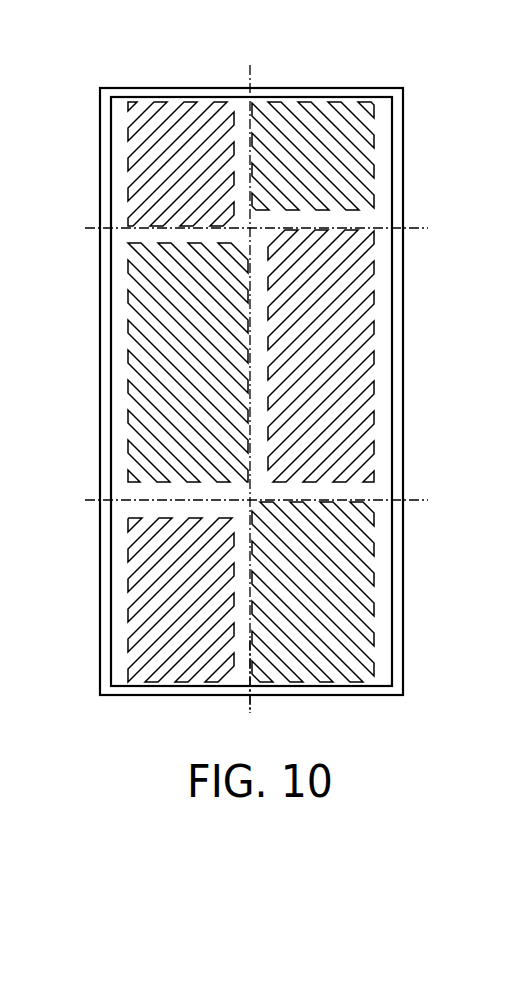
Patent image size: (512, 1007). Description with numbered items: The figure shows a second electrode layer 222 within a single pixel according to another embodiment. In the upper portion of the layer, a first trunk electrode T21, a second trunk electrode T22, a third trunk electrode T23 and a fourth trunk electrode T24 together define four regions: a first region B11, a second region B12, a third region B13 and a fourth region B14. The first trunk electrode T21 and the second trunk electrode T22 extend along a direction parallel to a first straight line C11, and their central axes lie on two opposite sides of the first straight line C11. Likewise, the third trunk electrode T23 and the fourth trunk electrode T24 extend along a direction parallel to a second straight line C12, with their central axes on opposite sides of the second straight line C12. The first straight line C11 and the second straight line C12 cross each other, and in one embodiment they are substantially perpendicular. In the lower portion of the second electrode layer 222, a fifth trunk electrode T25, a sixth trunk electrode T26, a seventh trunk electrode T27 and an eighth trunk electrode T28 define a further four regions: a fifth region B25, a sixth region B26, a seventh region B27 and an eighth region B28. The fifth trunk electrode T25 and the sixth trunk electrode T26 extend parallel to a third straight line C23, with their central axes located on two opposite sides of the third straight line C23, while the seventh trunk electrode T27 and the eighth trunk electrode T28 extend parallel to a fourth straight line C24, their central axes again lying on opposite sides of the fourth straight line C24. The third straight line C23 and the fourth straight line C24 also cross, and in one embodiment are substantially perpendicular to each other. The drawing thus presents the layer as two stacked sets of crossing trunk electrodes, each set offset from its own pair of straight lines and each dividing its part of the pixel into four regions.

The second electrode layer 222 is at (491, 70).
The first straight line C11 is at (251, 378).
The second straight line C12 is at (230, 228).
The third straight line C23 is at (249, 691).
The fourth straight line C24 is at (230, 500).
The first region B11 is at (380, 126).
The second region B12 is at (120, 158).
The third region B13 is at (120, 262).
The fourth region B14 is at (382, 265).
The fifth region B25 is at (383, 385).
The sixth region B26 is at (123, 372).
The seventh region B27 is at (123, 640).
The eighth region B28 is at (383, 582).
The first trunk electrode T21 is at (242, 130).
The second trunk electrode T22 is at (250, 347).
The third trunk electrode T23 is at (167, 237).
The fourth trunk electrode T24 is at (333, 219).
The fifth trunk electrode T25 is at (250, 462).
The sixth trunk electrode T26 is at (240, 578).
The seventh trunk electrode T27 is at (160, 512).
The eighth trunk electrode T28 is at (339, 492).